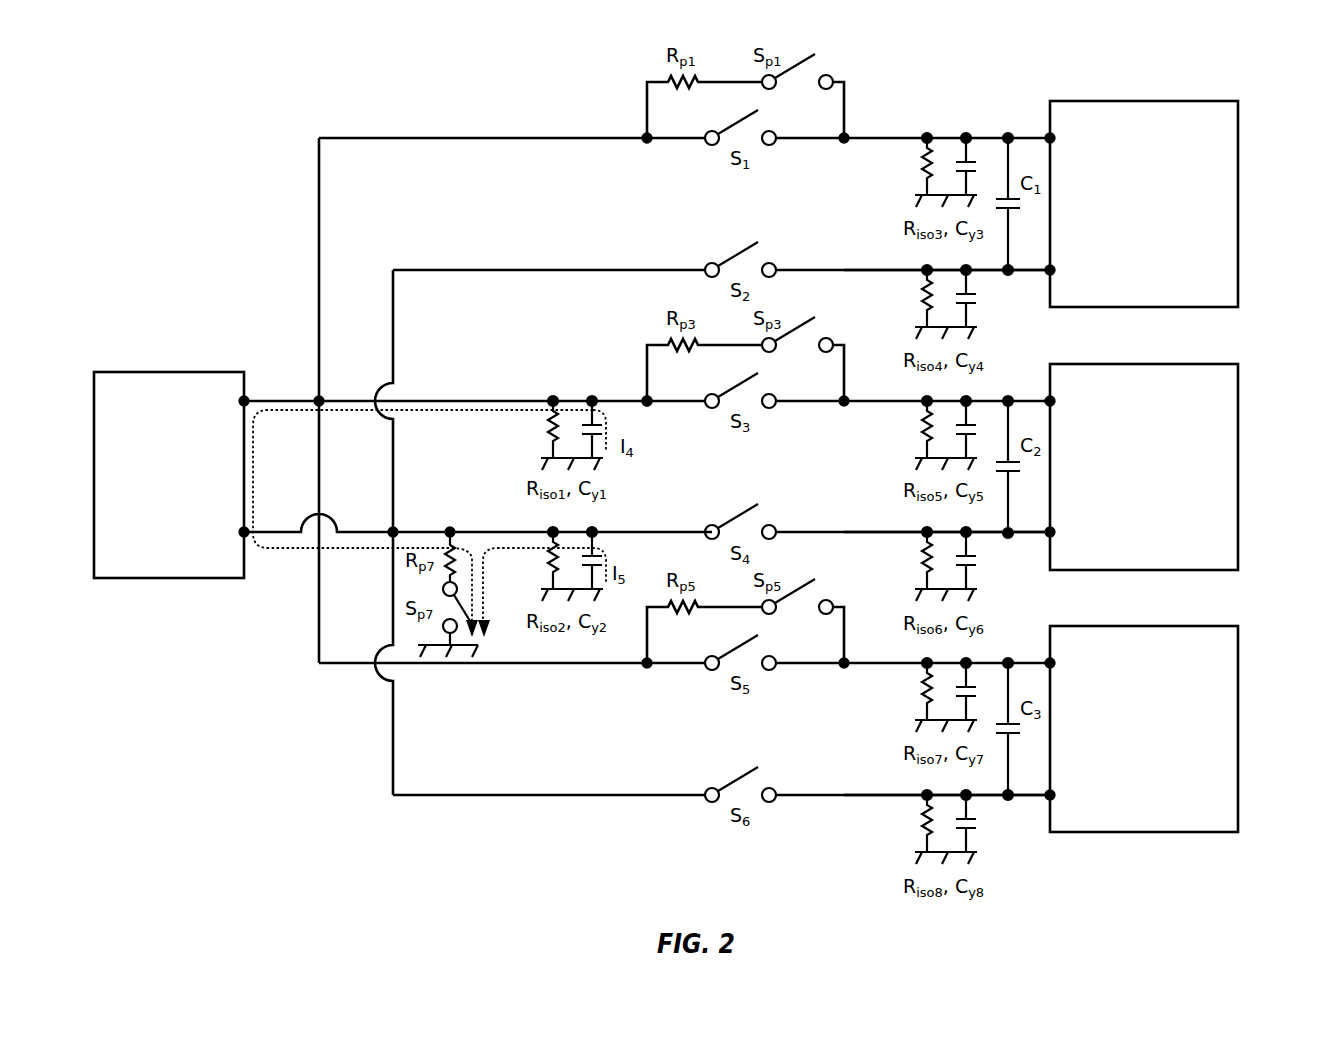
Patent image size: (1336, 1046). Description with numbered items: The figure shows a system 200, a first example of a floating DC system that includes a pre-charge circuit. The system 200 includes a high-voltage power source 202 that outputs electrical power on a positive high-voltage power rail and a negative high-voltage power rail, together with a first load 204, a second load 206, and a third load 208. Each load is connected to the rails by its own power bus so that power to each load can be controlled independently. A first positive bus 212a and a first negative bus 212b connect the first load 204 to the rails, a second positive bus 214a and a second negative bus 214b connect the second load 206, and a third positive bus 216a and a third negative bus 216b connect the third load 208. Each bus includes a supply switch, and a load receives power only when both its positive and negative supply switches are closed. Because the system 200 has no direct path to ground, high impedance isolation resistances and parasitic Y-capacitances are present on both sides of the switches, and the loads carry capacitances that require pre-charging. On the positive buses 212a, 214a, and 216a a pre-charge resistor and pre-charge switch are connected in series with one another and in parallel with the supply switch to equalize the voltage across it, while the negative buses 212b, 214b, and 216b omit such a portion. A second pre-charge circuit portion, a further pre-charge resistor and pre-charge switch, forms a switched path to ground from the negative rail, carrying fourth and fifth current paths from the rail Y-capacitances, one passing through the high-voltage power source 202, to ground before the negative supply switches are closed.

The system 200 is at (216, 207).
The high-voltage power source 202 is at (166, 579).
The first load 204 is at (1238, 206).
The second load 206 is at (1238, 464).
The third load 208 is at (1238, 727).
The first positive bus 212a is at (873, 138).
The first negative bus 212b is at (873, 270).
The second positive bus 214a is at (873, 401).
The second negative bus 214b is at (873, 532).
The third positive bus 216a is at (873, 663).
The third negative bus 216b is at (873, 795).